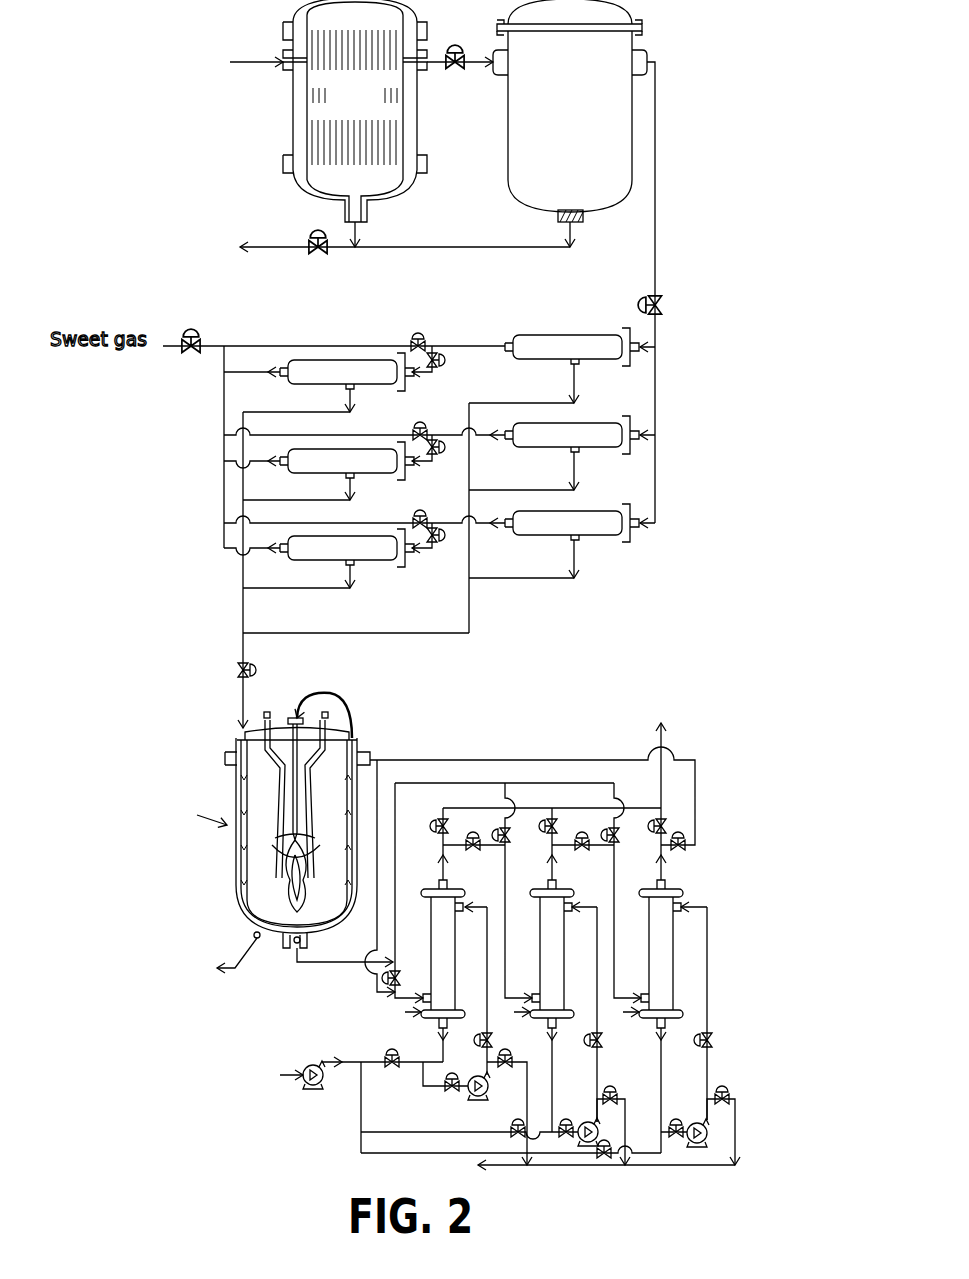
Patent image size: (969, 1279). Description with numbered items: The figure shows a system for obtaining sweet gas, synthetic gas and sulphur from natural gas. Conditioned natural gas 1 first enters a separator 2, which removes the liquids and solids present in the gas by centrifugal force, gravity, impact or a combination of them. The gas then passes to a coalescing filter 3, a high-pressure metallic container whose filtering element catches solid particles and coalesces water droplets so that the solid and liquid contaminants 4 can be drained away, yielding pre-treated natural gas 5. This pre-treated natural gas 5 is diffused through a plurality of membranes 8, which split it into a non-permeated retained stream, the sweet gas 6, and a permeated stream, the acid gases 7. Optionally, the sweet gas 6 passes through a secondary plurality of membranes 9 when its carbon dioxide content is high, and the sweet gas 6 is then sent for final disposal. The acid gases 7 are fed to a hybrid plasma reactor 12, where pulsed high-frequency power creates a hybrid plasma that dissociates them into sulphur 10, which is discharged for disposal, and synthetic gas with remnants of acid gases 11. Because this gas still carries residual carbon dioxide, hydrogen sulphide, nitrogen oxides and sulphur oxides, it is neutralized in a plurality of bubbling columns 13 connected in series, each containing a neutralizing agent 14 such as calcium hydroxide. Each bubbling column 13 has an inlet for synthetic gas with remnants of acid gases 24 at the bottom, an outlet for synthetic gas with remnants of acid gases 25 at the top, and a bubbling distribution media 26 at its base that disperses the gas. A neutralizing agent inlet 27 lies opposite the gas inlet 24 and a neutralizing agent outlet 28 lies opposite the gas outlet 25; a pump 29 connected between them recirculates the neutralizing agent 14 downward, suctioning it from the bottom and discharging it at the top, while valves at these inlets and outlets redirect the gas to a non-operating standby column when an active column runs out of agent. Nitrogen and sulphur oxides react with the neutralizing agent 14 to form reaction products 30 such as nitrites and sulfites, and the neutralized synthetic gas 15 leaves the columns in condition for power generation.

The natural gas 1 is at (252, 62).
The separator 2 is at (355, 111).
The coalescing filter 3 is at (570, 111).
The solid and liquid contaminants 4 is at (399, 239).
The pre-treated natural gas 5 is at (656, 295).
The sweet gas 6 is at (358, 441).
The acid gases 7 is at (343, 680).
The plurality of membranes 8 is at (554, 480).
The secondary plurality of membranes 9 is at (328, 493).
The sulphur 10 is at (278, 836).
The synthetic gas with remnants of acid gases 11 is at (345, 971).
The hybrid plasma reactor 12 is at (266, 835).
The bubbling columns 13 is at (552, 954).
The neutralizing agent 14 is at (349, 1069).
The synthetic gas 15 is at (659, 789).
The inlet for synthetic gas with remnants of acid gases 24 is at (525, 985).
The outlet for synthetic gas with remnants of acid gases 25 is at (560, 844).
The bubbling distribution media 26 is at (512, 1012).
The neutralizing agent inlet 27 is at (588, 1005).
The neutralizing agent outlet 28 is at (562, 1090).
The pump 29 is at (581, 1107).
The reaction products 30 is at (548, 1118).